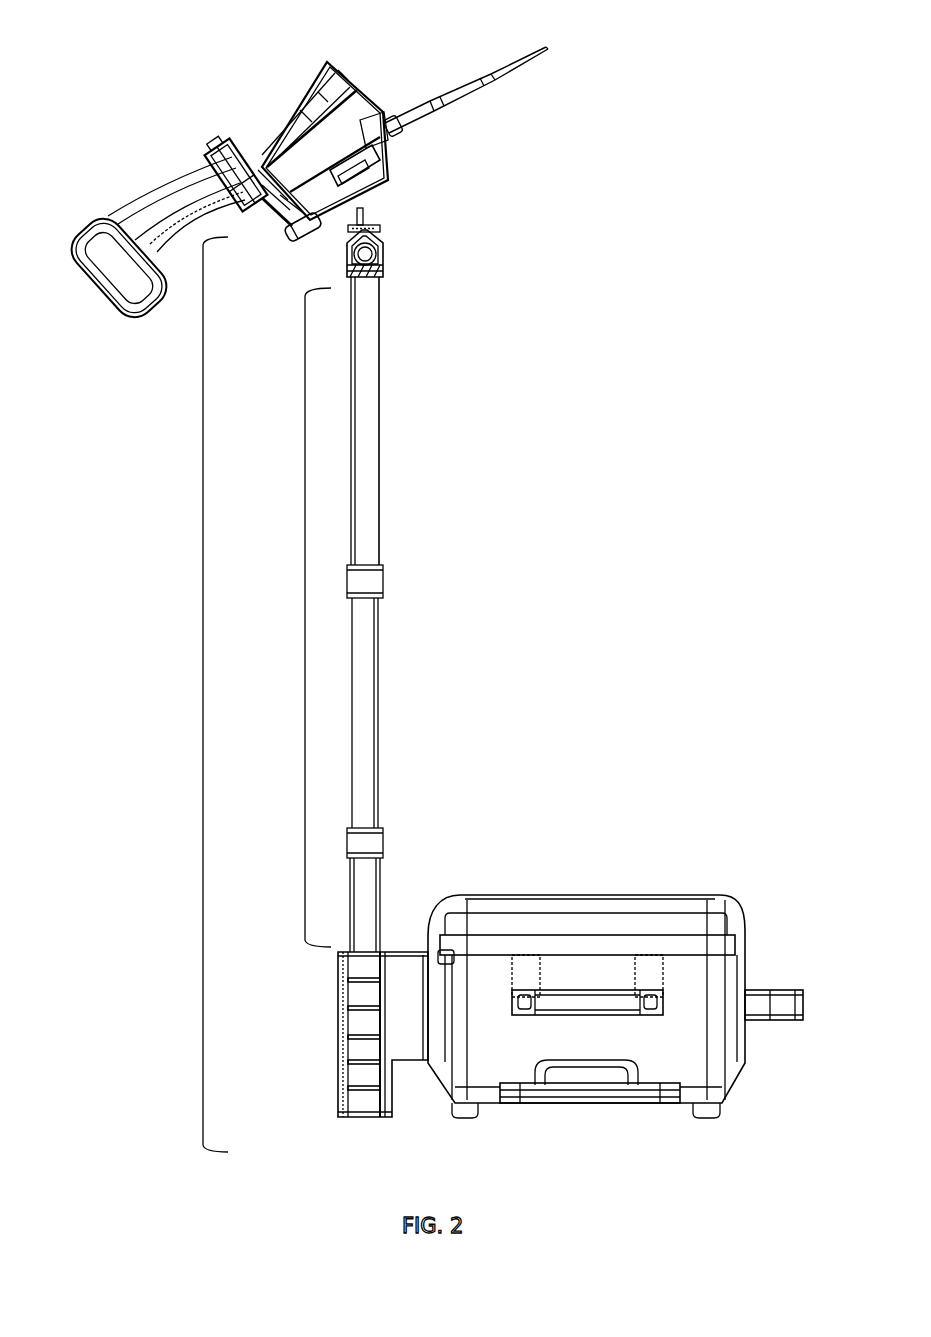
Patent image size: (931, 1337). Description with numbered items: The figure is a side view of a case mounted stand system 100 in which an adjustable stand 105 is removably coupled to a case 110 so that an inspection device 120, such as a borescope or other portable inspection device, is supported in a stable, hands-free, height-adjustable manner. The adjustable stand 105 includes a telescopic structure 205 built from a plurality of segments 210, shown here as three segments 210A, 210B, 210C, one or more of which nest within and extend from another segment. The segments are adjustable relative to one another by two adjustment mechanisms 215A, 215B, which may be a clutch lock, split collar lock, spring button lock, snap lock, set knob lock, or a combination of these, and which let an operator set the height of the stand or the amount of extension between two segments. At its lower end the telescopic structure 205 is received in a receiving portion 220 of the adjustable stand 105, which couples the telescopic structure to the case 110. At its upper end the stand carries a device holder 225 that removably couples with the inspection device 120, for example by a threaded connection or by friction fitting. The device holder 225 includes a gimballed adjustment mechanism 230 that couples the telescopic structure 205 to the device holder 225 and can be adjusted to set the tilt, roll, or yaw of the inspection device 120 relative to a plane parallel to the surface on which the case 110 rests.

The case mounted stand system 100 is at (134, 76).
The adjustable stand 105 is at (203, 698).
The case 110 is at (681, 899).
The inspection device 120 is at (360, 81).
The telescopic structure 205 is at (305, 622).
The segments 210 is at (457, 614).
The segment 210A is at (383, 482).
The segment 210B is at (382, 705).
The segment 210C is at (382, 887).
The adjustment mechanism 215A is at (390, 845).
The adjustment mechanism 215B is at (380, 588).
The receiving portion 220 is at (343, 1057).
The device holder 225 is at (378, 203).
The gimballed adjustment mechanism 230 is at (389, 257).